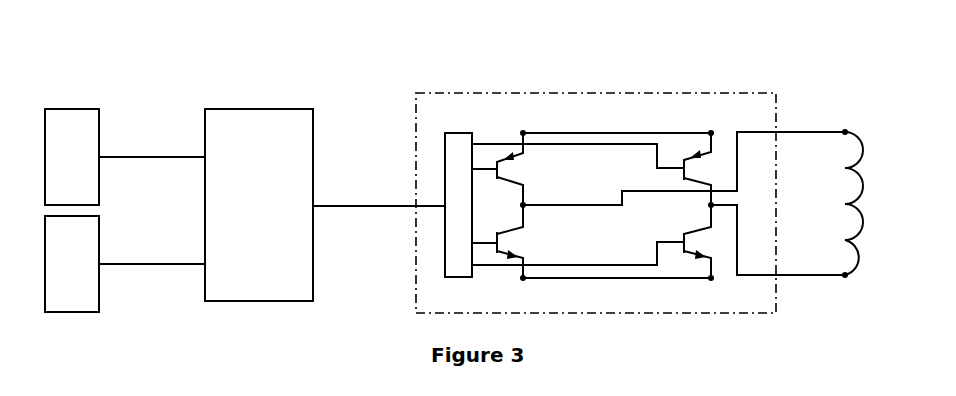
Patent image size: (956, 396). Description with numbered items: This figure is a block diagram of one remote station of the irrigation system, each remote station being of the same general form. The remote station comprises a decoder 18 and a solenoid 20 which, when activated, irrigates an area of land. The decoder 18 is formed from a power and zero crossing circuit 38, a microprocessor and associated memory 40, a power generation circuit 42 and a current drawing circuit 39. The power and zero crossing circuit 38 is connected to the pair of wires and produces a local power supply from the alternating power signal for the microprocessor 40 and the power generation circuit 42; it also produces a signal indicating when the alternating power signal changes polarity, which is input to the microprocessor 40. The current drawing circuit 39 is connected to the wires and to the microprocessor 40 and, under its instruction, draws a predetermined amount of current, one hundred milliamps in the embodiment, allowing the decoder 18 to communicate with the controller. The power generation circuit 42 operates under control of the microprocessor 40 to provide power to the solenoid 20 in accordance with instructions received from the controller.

The decoder 18 is at (276, 73).
The power and zero crossing circuit 38 is at (72, 157).
The current drawing circuit 39 is at (72, 264).
The microprocessor and associated memory 40 is at (259, 205).
The power generation circuit 42 is at (670, 318).
The solenoid 20 is at (863, 211).